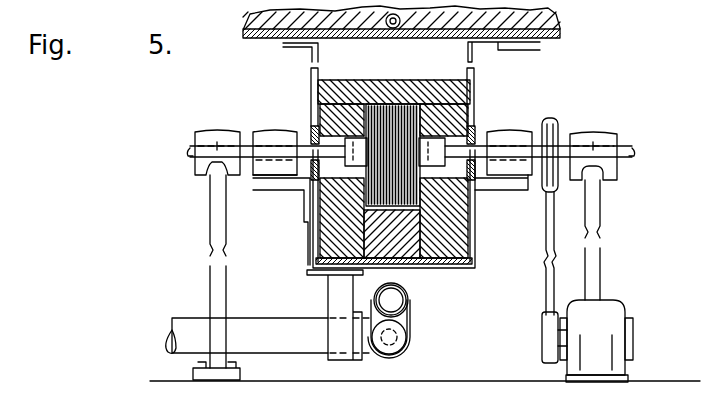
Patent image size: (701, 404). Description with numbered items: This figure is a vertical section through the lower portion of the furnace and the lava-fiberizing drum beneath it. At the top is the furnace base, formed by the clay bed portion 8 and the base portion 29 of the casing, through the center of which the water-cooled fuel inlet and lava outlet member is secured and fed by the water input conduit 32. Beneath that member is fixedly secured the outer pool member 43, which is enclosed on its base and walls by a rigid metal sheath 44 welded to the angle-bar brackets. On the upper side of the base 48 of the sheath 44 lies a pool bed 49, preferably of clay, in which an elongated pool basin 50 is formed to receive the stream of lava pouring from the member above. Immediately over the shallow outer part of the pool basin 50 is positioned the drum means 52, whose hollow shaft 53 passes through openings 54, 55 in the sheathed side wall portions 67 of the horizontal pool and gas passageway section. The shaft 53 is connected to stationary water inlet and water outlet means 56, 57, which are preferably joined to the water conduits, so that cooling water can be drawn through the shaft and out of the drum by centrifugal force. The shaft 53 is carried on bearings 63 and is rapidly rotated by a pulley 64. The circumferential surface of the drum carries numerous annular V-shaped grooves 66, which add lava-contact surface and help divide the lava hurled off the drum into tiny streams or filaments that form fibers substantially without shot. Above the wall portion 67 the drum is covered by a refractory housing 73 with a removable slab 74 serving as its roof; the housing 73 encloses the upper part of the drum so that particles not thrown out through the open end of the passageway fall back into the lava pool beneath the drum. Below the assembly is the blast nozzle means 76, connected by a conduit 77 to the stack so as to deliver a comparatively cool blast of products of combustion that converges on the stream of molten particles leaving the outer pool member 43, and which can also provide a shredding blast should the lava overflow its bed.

The clay bed portion 8 is at (553, 17).
The base portion 29 is at (535, 48).
The water input conduit 32 is at (393, 28).
The outer pool member 43 is at (305, 244).
The metal sheath 44 is at (320, 258).
The base 48 is at (450, 272).
The pool bed 49 is at (412, 262).
The pool basin 50 is at (330, 276).
The drum means 52 is at (365, 128).
The hollow shaft 53 is at (283, 133).
The opening 54 is at (488, 188).
The opening 55 is at (480, 150).
The stationary water inlet means 56 is at (200, 140).
The stationary water outlet means 57 is at (622, 144).
The bearings 63 is at (258, 140).
The pulley 64 is at (566, 124).
The annular V-shaped grooves 66 is at (396, 126).
The sheathed side wall portions 67 is at (330, 200).
The refractory housing 73 is at (490, 69).
The removable slab 74 is at (357, 88).
The blast nozzle means 76 is at (406, 316).
The conduit 77 is at (254, 322).